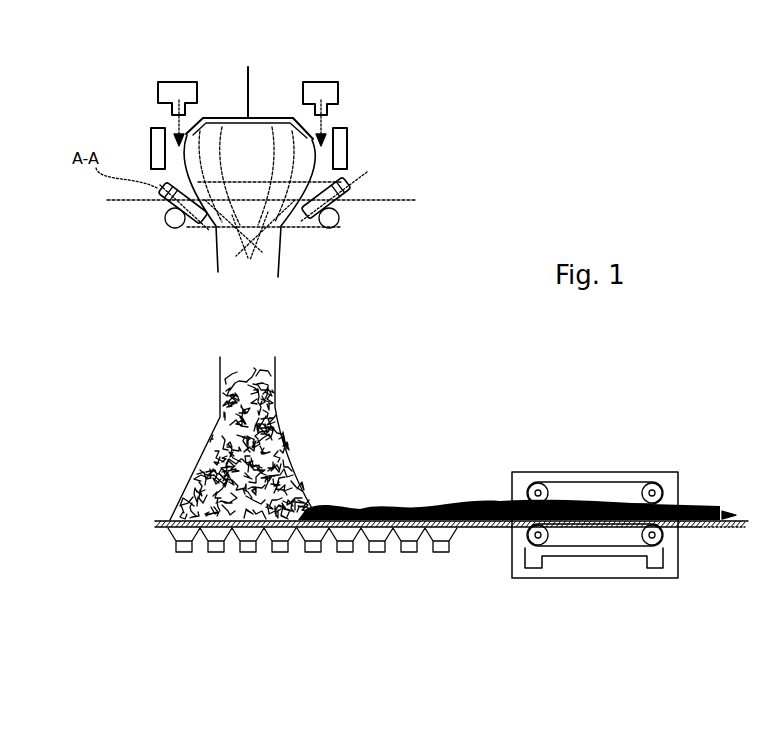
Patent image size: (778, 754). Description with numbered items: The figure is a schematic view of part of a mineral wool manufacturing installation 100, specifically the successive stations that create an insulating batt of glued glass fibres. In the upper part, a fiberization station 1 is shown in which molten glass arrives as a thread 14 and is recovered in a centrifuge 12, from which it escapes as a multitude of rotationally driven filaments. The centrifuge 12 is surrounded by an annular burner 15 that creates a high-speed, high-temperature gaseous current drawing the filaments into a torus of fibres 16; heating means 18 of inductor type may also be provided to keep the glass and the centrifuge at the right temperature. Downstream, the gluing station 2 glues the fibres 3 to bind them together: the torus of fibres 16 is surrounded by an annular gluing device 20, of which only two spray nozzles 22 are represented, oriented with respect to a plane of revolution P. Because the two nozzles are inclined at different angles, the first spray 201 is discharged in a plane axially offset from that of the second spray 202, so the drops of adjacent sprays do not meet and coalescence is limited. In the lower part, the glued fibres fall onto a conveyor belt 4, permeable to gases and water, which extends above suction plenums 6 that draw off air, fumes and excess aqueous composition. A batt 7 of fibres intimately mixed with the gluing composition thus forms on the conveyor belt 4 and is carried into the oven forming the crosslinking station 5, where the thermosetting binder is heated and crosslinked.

The fiberization station 1 is at (296, 82).
The gluing station 2 is at (396, 158).
The fibres 3 is at (336, 181).
The centrifuge 12 is at (243, 107).
The thread 14 is at (257, 113).
The annular burner 15 is at (325, 90).
The torus of fibres 16 is at (249, 202).
The heating means 18 is at (151, 128).
The gluing device 20 is at (348, 223).
The spray nozzles 22 is at (163, 212).
The first spray 201 is at (286, 233).
The second spray 202 is at (198, 232).
The plane of revolution P is at (415, 200).
The mineral wool manufacturing installation 100 is at (455, 417).
The conveyor belt 4 is at (170, 526).
The crosslinking station 5 is at (560, 472).
The suction plenums 6 is at (268, 553).
The batt 7 is at (353, 497).